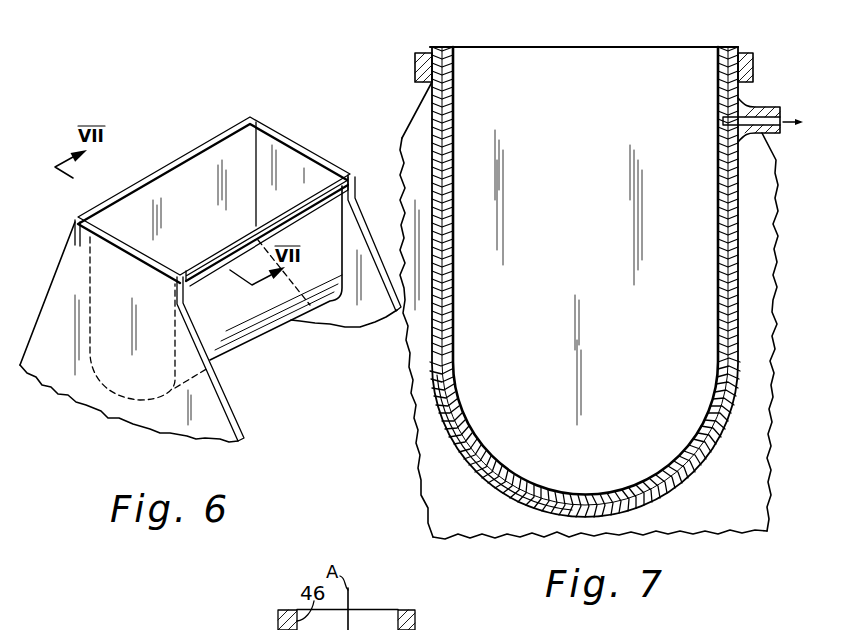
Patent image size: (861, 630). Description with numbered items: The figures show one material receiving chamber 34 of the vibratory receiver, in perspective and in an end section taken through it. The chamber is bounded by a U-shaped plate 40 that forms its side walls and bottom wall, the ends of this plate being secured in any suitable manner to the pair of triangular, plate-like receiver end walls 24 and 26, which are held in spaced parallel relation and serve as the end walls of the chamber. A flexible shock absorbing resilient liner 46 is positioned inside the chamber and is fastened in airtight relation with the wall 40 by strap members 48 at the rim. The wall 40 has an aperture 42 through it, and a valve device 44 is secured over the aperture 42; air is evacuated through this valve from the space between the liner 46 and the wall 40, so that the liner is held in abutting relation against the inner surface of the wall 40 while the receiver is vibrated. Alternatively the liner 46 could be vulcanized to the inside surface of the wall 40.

In FIG. 6, the end wall 24 is at (366, 240).
In FIG. 7, the end wall 24 is at (774, 280).
In FIG. 6, the end wall 26 is at (52, 296).
In FIG. 6, the material receiving chamber 34 is at (364, 607).
In FIG. 6, the U-shaped plate 40 is at (238, 352).
In FIG. 7, the U-shaped plate 40 is at (740, 187).
In FIG. 7, the aperture 42 is at (730, 122).
In FIG. 7, the valve device 44 is at (762, 107).
In FIG. 6, the flexible shock absorbing resilient liner 46 is at (193, 157).
In FIG. 7, the flexible shock absorbing resilient liner 46 is at (710, 68).
In FIG. 6, the strap member 48 is at (316, 205).
In FIG. 7, the strap member 48 is at (415, 68).